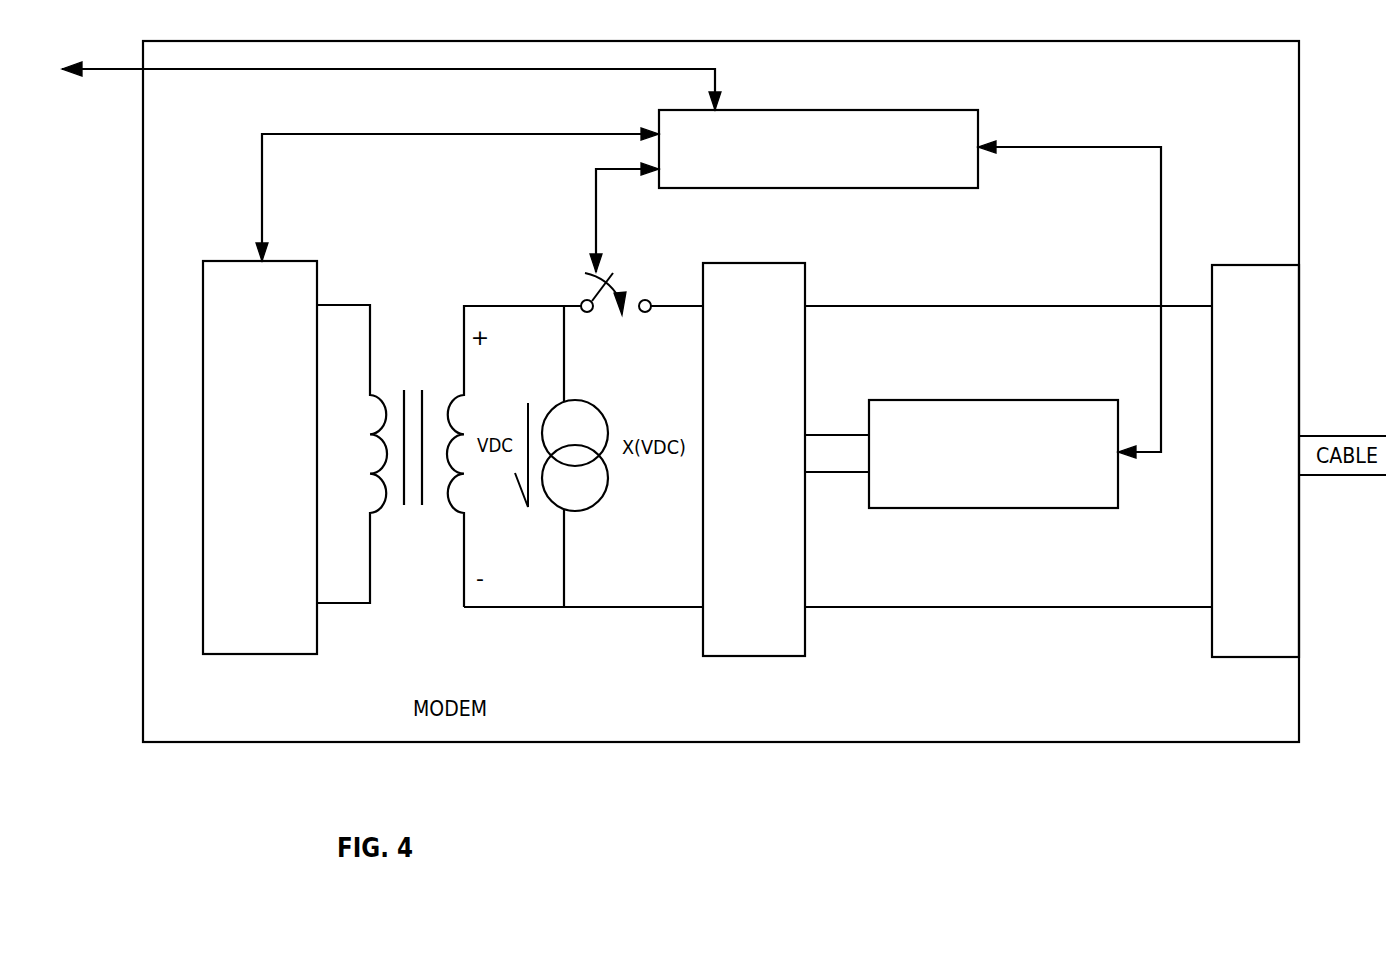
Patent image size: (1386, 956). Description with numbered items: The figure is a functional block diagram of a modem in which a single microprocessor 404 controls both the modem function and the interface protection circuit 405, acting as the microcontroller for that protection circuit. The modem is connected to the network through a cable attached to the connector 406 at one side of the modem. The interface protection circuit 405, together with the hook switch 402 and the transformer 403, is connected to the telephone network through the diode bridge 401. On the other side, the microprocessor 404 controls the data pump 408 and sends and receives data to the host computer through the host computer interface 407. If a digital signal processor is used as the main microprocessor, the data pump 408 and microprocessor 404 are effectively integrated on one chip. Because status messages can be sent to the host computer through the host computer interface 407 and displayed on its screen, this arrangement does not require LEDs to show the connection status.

The diode bridge 401 is at (738, 396).
The hook switch 402 is at (585, 273).
The transformer 403 is at (413, 388).
The microprocessor 404 is at (845, 110).
The interface protection circuit 405 is at (977, 462).
The connector 406 is at (1220, 658).
The host computer interface 407 is at (373, 72).
The data pump 408 is at (244, 391).